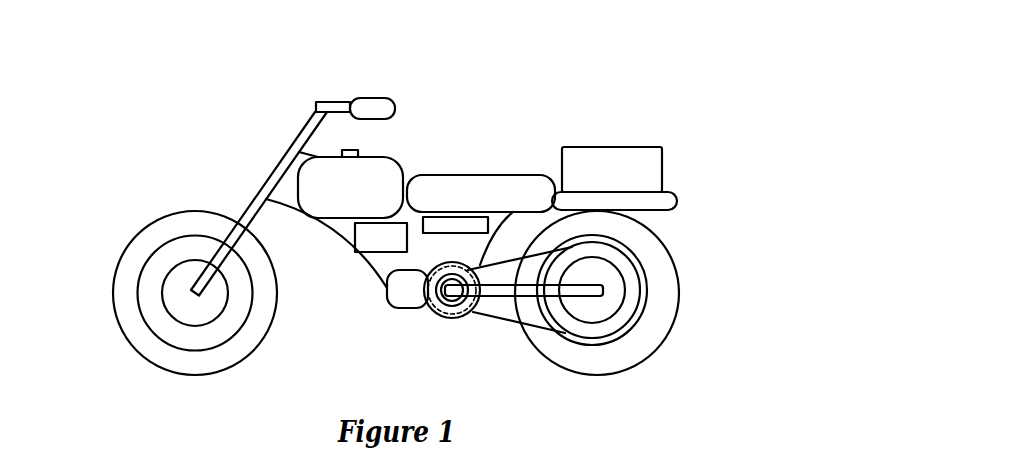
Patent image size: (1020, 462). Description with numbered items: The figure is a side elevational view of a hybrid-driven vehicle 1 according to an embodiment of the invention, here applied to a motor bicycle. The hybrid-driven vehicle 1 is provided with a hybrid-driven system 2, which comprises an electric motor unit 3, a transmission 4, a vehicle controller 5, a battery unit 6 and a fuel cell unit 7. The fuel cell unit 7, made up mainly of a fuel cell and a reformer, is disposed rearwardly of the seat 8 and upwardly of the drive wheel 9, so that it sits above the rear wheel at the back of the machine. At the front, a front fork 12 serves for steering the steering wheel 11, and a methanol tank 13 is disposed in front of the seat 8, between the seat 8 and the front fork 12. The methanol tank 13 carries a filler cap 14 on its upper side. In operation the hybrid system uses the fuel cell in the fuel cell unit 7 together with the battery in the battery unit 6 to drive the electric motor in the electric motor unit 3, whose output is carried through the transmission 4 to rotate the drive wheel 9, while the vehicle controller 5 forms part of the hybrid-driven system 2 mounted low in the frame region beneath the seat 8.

The hybrid-driven vehicle 1 is at (431, 143).
The hybrid-driven system 2 is at (378, 326).
The electric motor unit 3 is at (387, 298).
The transmission 4 is at (437, 323).
The vehicle controller 5 is at (467, 227).
The battery unit 6 is at (375, 244).
The fuel cell unit 7 is at (645, 172).
The seat 8 is at (525, 175).
The drive wheel 9 is at (647, 340).
The steering wheel 11 is at (132, 323).
The front fork 12 is at (243, 212).
The methanol tank 13 is at (327, 187).
The filler cap 14 is at (348, 150).